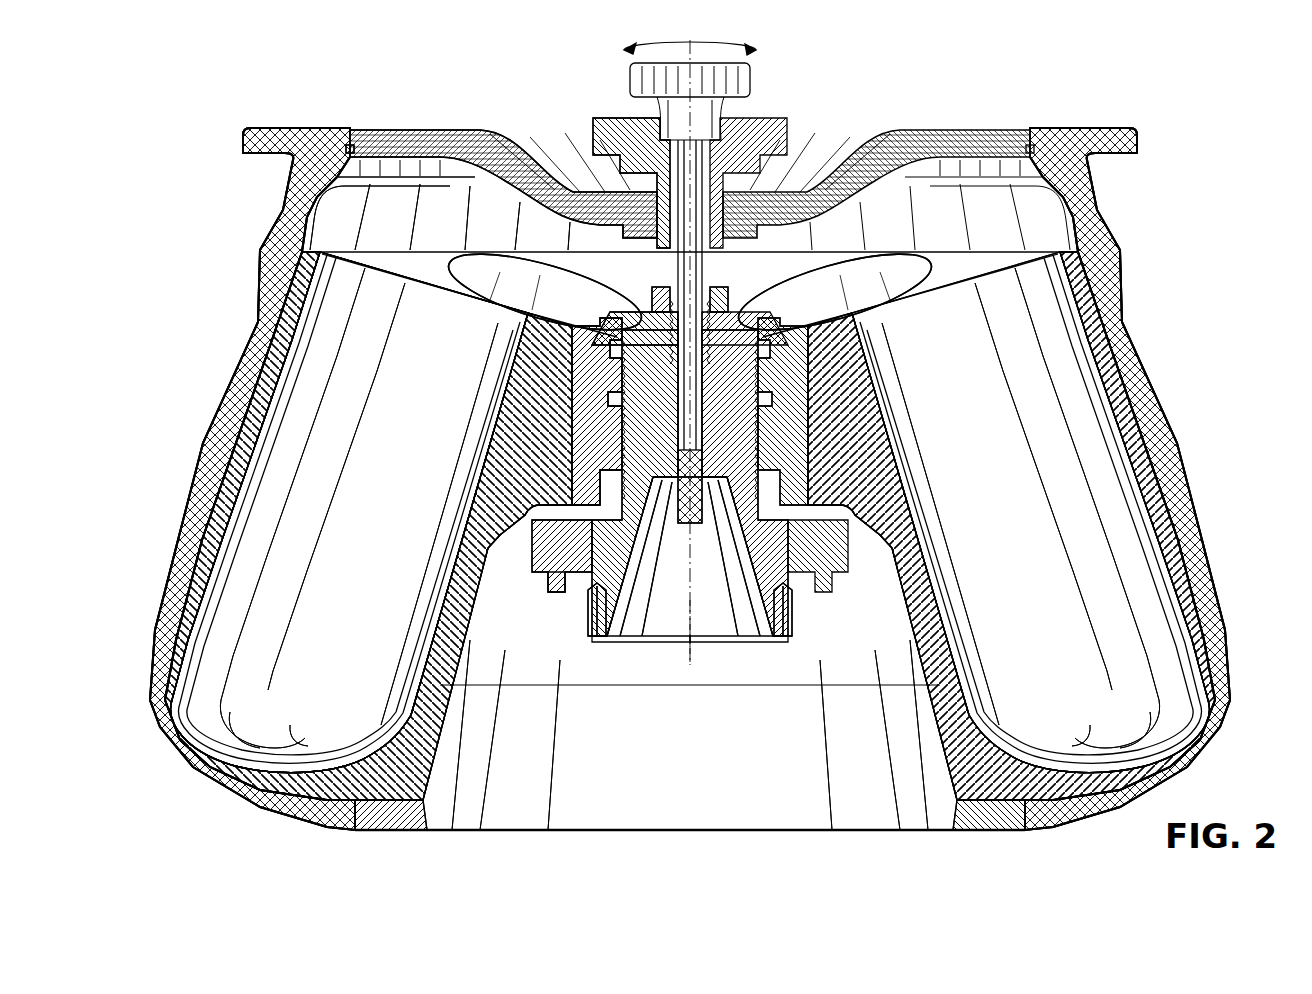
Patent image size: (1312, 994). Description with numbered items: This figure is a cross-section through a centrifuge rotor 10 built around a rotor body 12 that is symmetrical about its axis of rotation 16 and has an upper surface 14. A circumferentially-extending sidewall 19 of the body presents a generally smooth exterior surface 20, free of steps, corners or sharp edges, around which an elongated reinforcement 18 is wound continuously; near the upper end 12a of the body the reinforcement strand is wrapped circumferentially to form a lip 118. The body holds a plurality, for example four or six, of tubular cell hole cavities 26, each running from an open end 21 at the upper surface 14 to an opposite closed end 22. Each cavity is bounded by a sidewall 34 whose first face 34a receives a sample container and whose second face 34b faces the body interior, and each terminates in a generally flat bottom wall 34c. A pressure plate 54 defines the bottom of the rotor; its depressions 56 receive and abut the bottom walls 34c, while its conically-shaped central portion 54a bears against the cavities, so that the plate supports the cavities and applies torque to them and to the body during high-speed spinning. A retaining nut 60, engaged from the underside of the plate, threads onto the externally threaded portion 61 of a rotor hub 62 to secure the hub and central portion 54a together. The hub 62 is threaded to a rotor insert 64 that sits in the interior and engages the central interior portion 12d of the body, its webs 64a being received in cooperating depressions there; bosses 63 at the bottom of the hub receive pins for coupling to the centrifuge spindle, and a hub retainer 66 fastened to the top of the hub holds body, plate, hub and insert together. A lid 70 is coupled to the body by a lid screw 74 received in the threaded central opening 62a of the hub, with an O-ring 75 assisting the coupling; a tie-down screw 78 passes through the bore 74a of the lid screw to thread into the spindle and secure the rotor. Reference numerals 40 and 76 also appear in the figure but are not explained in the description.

The centrifuge rotor 10 is at (1245, 106).
The rotor body 12 is at (1140, 406).
The upper end of rotor body 12a is at (300, 268).
The central interior portion of rotor body 12d is at (545, 352).
The upper surface 14 is at (1000, 262).
The axis of rotation 16 is at (690, 660).
The reinforcement 18 is at (205, 458).
The sidewall 19 is at (1180, 548).
The exterior surface 20 is at (1185, 490).
The open end 21 is at (395, 290).
The closed end 22 is at (240, 735).
The tubular cell hole cavities 26 is at (505, 272).
The sidewall 34 is at (478, 540).
The first face 34a is at (375, 576).
The second face 34b is at (505, 657).
The bottom walls 34c is at (195, 692).
The upper insert 40 is at (340, 205).
The pressure plate 54 is at (352, 832).
The central portion of pressure plate 54a is at (450, 683).
The depressions 56 is at (262, 756).
The retaining nut 60 is at (548, 590).
The externally threaded portion 61 is at (562, 600).
The rotor hub 62 is at (796, 600).
The threaded central opening 62a is at (640, 318).
The bosses 63 is at (595, 625).
The rotor insert 64 is at (558, 496).
The webs 64a is at (560, 432).
The hub retainer 66 is at (765, 325).
The lid 70 is at (920, 130).
The lid screw 74 is at (786, 120).
The bore 74a is at (686, 270).
The O-ring 75 is at (345, 148).
The knob 76 is at (747, 82).
The tie-down screw 78 is at (715, 532).
The lip 118 is at (1118, 130).